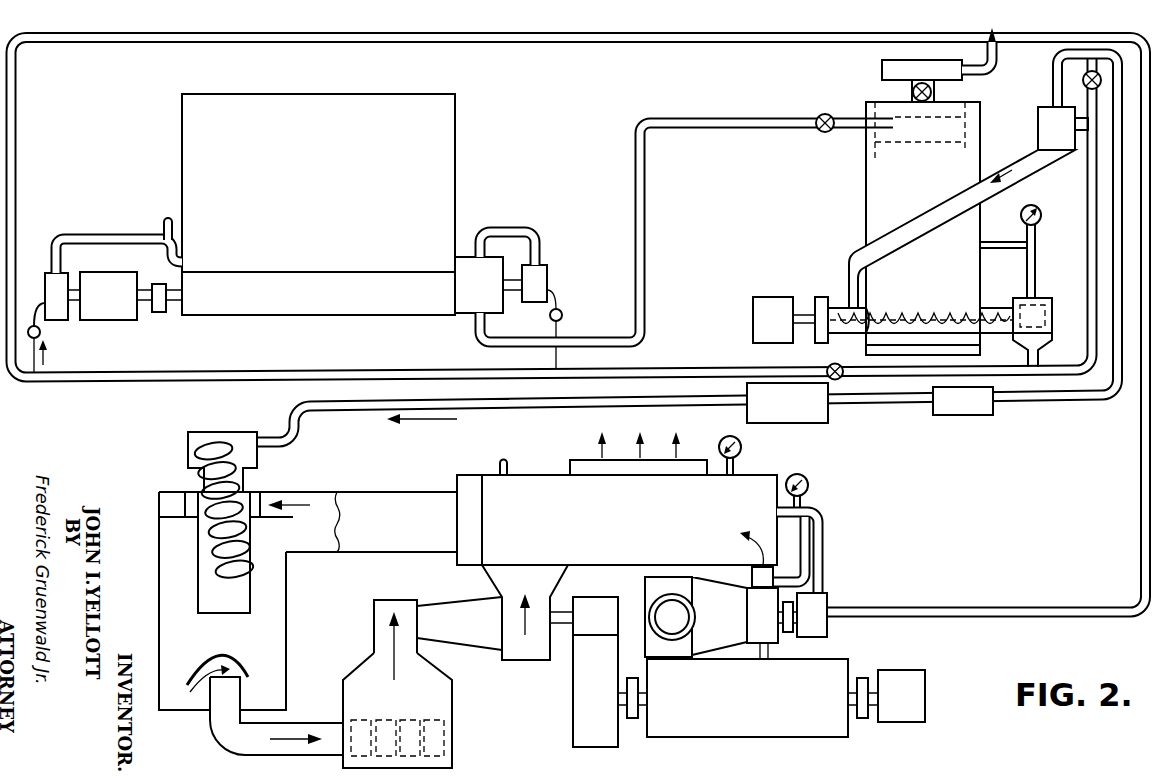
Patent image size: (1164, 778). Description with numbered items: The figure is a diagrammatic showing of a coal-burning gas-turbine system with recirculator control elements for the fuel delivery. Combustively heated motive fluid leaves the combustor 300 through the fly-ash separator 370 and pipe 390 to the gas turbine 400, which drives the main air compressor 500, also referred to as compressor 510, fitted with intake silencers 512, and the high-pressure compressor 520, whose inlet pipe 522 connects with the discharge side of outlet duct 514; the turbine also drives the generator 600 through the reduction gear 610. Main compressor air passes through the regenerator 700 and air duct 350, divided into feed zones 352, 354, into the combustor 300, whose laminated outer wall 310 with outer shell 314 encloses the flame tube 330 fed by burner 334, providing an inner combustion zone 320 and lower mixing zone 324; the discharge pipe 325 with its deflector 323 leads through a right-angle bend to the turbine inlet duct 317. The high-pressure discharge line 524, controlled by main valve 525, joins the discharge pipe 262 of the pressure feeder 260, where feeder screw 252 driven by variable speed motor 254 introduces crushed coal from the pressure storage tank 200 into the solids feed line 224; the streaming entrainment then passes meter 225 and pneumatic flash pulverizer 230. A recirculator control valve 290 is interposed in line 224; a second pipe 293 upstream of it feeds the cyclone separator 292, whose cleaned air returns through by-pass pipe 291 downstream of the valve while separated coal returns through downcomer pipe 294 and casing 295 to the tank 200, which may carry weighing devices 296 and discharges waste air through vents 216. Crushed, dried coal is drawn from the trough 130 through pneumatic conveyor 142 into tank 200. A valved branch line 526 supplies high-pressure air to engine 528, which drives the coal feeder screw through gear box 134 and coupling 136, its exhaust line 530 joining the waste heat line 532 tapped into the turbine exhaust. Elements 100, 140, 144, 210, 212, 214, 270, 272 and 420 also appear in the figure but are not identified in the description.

The combustion chamber 100 is at (328, 163).
The trough 130 is at (368, 298).
The gear box 134 is at (130, 264).
The coupling 136 is at (160, 313).
The header 140 is at (465, 298).
The pneumatic conveyor 142 is at (641, 213).
The valve 144 is at (833, 99).
The pressure storage tank 200 is at (940, 191).
The inlet 210 is at (871, 144).
The feed hopper 212 is at (935, 92).
The valve 214 is at (910, 92).
The vents 216 is at (998, 76).
The solids feed line 224 is at (1087, 198).
The meter 225 is at (947, 417).
The pneumatic flash pulverizer 230 is at (793, 413).
The feeder screw 252 is at (952, 290).
The variable speed motor 254 is at (783, 284).
The pressure feeder 260 is at (1082, 322).
The discharge pipe 262 is at (1040, 353).
The vent pipe 270 is at (1036, 268).
The pressure gauge 272 is at (1016, 224).
The recirculator control valve 290 is at (1083, 79).
The by-pass pipe 291 is at (1058, 52).
The cyclone separator 292 is at (1038, 137).
The second pipe 293 is at (1084, 130).
The downcomer pipe 294 is at (922, 219).
The casing 295 is at (835, 306).
The weighing devices 296 is at (972, 352).
The combustor 300 is at (159, 606).
The laminated outer wall 310 is at (161, 658).
The outer shell 314 is at (172, 478).
The inlet duct 317 is at (333, 699).
The inner combustion zone 320 is at (223, 526).
The deflector 323 is at (237, 663).
The lower mixing zone 324 is at (246, 646).
The discharge pipe 325 is at (225, 686).
The flame tube 330 is at (198, 581).
The burner 334 is at (248, 420).
The air duct 350 is at (430, 478).
The feed zone 352 is at (272, 491).
The feed zone 354 is at (307, 548).
The fly ash separator 370 is at (453, 742).
The flue 390 is at (390, 613).
The gas turbine 400 is at (480, 632).
The chamber 420 is at (507, 578).
The air compressor 500 is at (745, 623).
The main compressor 510 is at (764, 632).
The air intake silencers 512 is at (672, 617).
The outlet duct 514 is at (763, 576).
The high pressure compressor 520 is at (820, 628).
The inlet pipe 522 is at (802, 577).
The discharge line 524 is at (16, 152).
The main valve 525 is at (830, 363).
The valved branch line 526 is at (32, 339).
The engine 528 is at (58, 321).
The exhaust line 530 is at (120, 226).
The waste heat line 532 is at (172, 218).
The generator 600 is at (758, 706).
The reduction gear 610 is at (573, 695).
The regenerator 700 is at (640, 522).